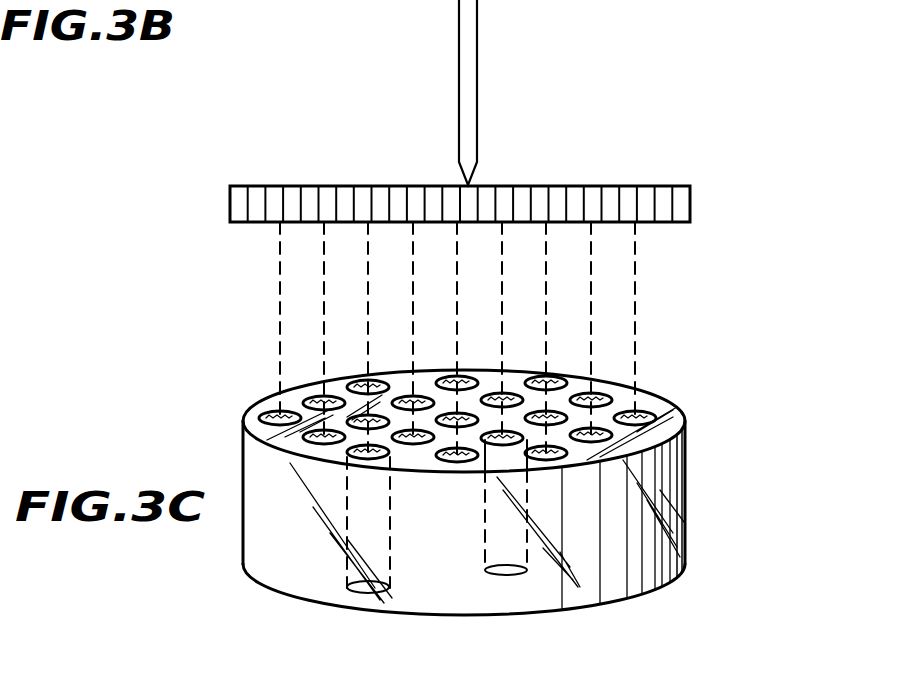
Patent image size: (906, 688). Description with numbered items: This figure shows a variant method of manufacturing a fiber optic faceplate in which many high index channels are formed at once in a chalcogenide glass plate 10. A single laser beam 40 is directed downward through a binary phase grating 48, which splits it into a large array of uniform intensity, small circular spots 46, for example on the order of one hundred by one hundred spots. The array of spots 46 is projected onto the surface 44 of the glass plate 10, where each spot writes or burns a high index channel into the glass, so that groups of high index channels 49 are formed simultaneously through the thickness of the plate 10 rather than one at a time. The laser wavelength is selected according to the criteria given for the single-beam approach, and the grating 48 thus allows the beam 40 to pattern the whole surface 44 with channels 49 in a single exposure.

The disc 10 is at (682, 496).
The laser beam 40 is at (478, 26).
The surface 44 is at (647, 398).
The spots 46 is at (676, 410).
The binary phase grating 48 is at (375, 185).
The high index channels 49 is at (485, 523).